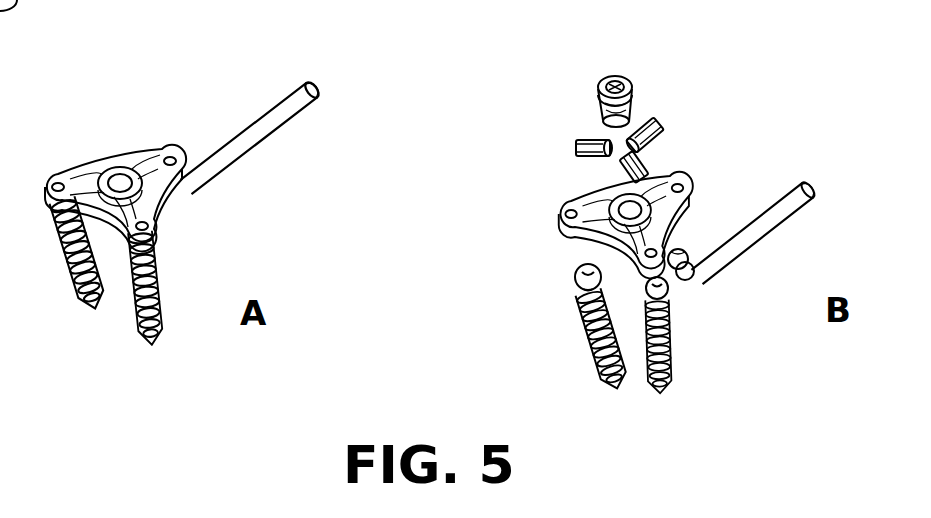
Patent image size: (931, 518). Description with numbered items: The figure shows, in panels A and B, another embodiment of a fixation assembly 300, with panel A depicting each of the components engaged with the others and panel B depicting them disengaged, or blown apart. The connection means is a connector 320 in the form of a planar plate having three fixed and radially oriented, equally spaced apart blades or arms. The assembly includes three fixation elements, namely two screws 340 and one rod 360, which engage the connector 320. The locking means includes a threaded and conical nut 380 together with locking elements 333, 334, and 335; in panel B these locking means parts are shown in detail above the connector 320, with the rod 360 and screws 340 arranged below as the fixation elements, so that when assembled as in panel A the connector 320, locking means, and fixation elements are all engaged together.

The fixation assembly 300 is at (272, 265).
The connector 320 is at (548, 223).
The locking element 333 is at (575, 148).
The locking element 334 is at (659, 123).
The locking element 335 is at (642, 166).
The screw 340 is at (140, 342).
The rod 360 is at (842, 222).
The threaded and conical nut 380 is at (343, 63).